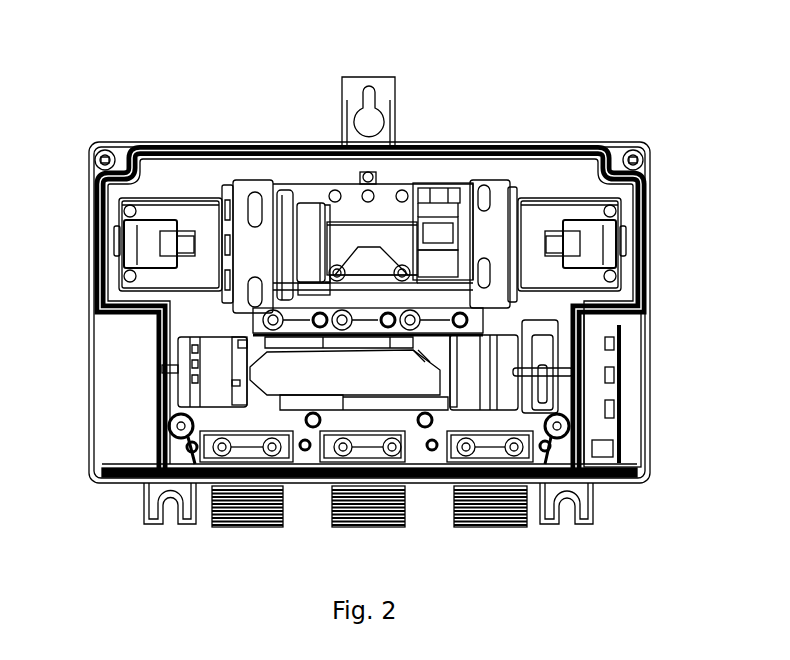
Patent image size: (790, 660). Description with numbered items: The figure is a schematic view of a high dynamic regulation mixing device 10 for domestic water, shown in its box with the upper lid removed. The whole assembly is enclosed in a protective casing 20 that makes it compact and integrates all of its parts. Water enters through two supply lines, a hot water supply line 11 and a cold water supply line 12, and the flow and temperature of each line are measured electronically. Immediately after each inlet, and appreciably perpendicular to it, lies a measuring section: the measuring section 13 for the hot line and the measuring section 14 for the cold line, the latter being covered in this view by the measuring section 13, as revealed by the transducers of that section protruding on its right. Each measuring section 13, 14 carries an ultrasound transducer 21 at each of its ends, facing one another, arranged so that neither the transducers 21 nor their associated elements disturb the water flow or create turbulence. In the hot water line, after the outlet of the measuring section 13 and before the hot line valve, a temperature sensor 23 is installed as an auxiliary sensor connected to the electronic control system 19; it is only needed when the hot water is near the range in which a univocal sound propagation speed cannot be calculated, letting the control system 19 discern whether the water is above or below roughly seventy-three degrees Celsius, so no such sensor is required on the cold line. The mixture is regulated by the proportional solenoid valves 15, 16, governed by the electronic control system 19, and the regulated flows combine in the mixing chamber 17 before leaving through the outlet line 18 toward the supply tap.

The mixing device 10 is at (160, 103).
The protective casing 20 is at (177, 143).
The proportional solenoid valve 16 is at (117, 215).
The proportional solenoid valve 15 is at (623, 211).
The mixing chamber 17 is at (348, 262).
The temperature sensor 23 is at (490, 182).
The measuring section 14 is at (262, 332).
The ultrasound transducer 21 is at (268, 348).
The measuring section 13 is at (165, 490).
The electronic control system 19 is at (644, 489).
The hot water supply line 11 is at (256, 533).
The outlet line 18 is at (388, 530).
The cold water supply line 12 is at (500, 530).